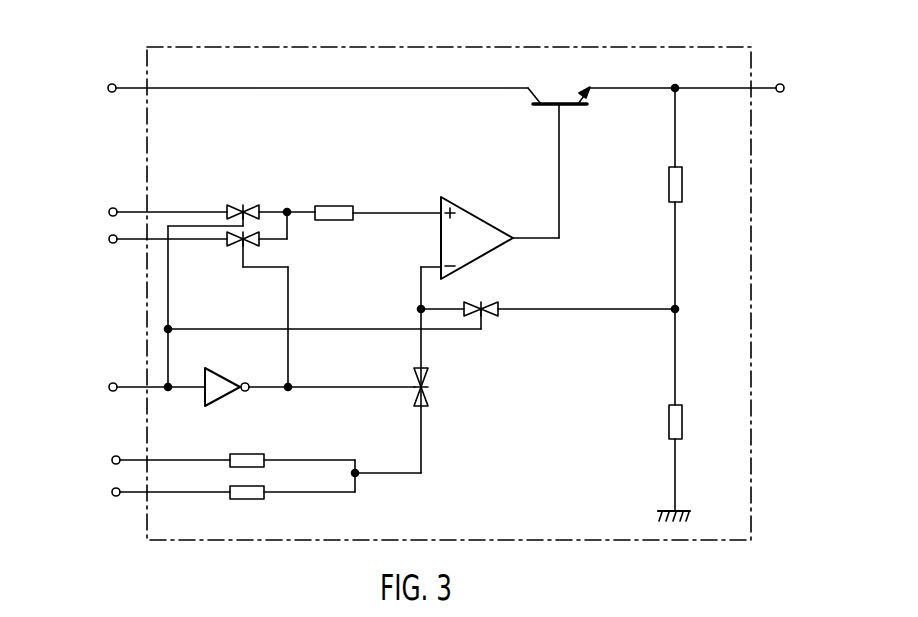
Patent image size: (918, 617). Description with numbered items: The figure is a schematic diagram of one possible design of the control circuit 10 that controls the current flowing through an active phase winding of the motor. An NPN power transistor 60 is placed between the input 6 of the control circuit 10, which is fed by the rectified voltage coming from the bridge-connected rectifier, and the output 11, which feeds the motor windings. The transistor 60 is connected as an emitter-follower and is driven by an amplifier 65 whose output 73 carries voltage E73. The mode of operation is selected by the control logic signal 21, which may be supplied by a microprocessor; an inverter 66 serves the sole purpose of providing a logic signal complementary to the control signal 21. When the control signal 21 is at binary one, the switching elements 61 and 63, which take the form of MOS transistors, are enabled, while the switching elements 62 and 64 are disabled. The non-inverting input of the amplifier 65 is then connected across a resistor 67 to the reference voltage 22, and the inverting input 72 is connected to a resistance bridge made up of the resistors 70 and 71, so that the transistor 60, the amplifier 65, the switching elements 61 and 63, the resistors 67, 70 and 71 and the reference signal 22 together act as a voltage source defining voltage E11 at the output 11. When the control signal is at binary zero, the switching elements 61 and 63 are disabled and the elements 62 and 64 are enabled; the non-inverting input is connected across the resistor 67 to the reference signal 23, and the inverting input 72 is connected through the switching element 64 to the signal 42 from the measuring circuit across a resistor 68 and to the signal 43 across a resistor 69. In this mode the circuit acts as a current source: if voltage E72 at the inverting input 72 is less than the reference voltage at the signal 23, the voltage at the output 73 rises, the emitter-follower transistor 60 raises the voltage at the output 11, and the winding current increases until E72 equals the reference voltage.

The input 6 is at (308, 88).
The control circuit 10 is at (663, 47).
The output 11 is at (700, 88).
The control logic signal 21 is at (143, 387).
The reference voltage 22 is at (154, 212).
The reference signal 23 is at (154, 239).
The signal 42 is at (156, 460).
The signal 43 is at (156, 492).
The NPN power transistor 60 is at (560, 101).
The switching element 61 is at (237, 207).
The switching element 62 is at (240, 246).
The switching element 63 is at (487, 316).
The switching element 64 is at (428, 398).
The amplifier 65 is at (481, 232).
The inverter 66 is at (215, 393).
The resistor 67 is at (330, 206).
The resistor 68 is at (250, 446).
The resistor 69 is at (247, 499).
The resistor 70 is at (683, 186).
The resistor 71 is at (682, 427).
The inverting input 72 is at (418, 265).
The output 73 is at (528, 240).